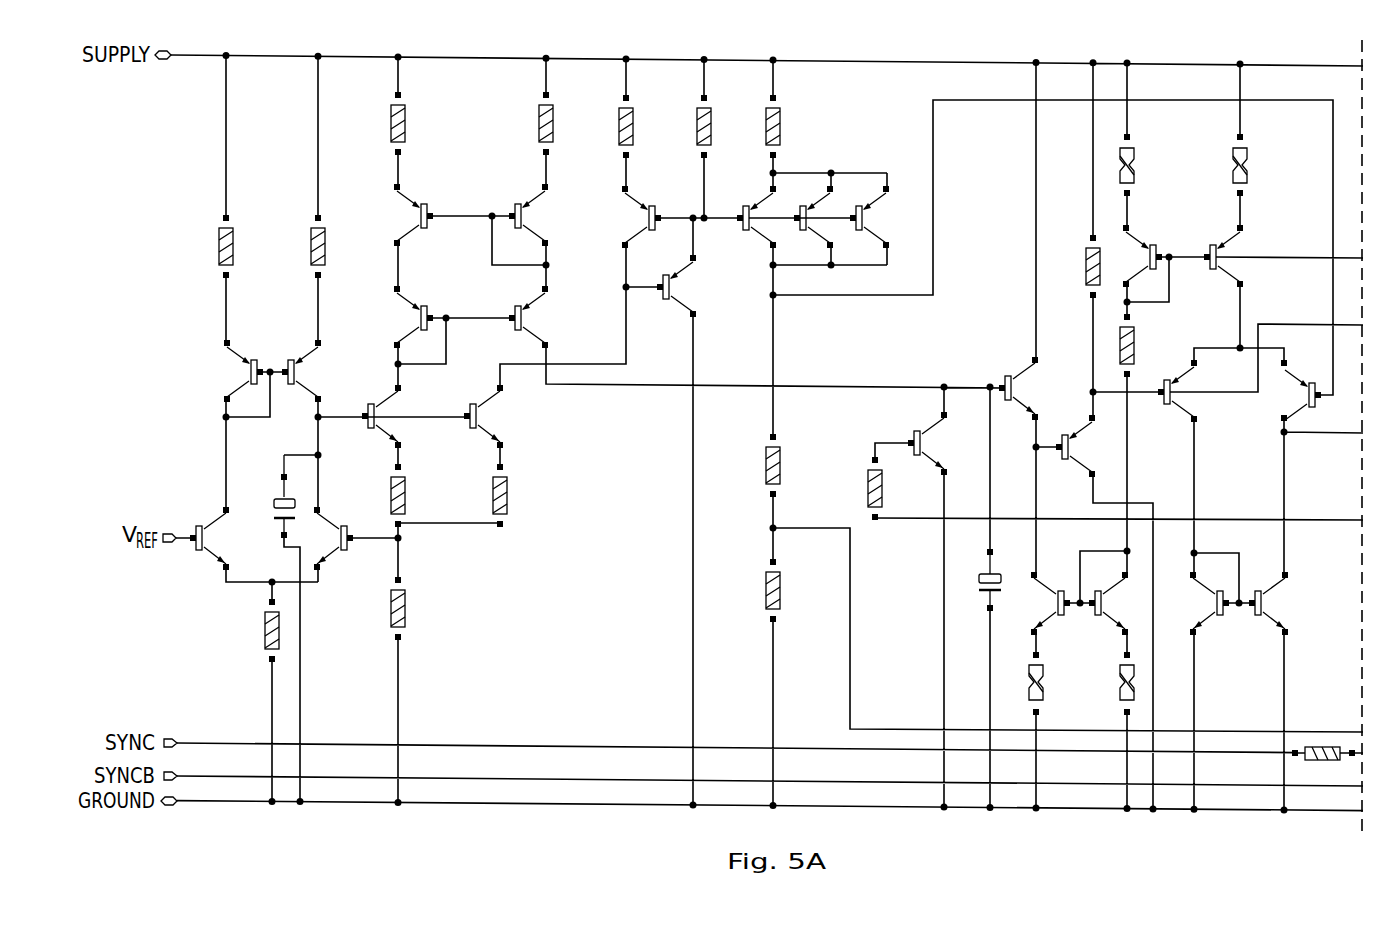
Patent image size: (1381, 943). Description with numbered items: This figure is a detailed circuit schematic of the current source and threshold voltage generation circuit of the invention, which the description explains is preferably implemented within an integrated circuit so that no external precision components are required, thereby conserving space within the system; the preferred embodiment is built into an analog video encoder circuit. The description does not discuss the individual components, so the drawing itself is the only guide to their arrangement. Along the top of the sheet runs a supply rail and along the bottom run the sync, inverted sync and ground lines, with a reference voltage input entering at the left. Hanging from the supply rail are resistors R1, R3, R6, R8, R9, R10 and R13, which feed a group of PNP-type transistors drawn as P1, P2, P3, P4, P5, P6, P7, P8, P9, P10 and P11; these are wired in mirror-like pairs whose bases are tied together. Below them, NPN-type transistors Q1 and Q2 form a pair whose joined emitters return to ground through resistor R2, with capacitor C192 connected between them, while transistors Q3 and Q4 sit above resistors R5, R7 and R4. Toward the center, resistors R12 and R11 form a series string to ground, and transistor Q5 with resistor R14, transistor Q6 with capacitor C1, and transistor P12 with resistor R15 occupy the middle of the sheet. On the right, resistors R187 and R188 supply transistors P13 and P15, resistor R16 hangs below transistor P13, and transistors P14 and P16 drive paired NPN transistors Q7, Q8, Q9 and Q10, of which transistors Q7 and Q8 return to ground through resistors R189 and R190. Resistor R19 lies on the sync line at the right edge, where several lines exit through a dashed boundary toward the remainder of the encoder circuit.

The resistor R1 is at (214, 246).
The resistor R2 is at (259, 630).
The resistor R3 is at (306, 246).
The resistor R4 is at (385, 608).
The resistor R5 is at (386, 500).
The resistor R6 is at (385, 123).
The resistor R7 is at (487, 500).
The resistor R8 is at (532, 123).
The resistor R9 is at (613, 126).
The resistor R10 is at (686, 126).
The resistor R11 is at (754, 590).
The resistor R12 is at (754, 465).
The resistor R13 is at (755, 126).
The resistor R14 is at (858, 488).
The resistor R15 is at (1075, 266).
The resistor R16 is at (1145, 345).
The resistor R19 is at (1323, 770).
The resistor R187 is at (1151, 165).
The resistor R188 is at (1264, 165).
The resistor R189 is at (1059, 683).
The resistor R190 is at (1104, 683).
The PNP transistor P1 is at (243, 367).
The PNP transistor P2 is at (301, 367).
The PNP transistor P3 is at (413, 313).
The PNP transistor P4 is at (413, 212).
The PNP transistor P5 is at (528, 313).
The PNP transistor P6 is at (528, 212).
The PNP transistor P7 is at (641, 213).
The PNP transistor P8 is at (676, 283).
The PNP transistor P9 is at (756, 213).
The PNP transistor P10 is at (811, 213).
The PNP transistor P11 is at (867, 213).
The PNP transistor P12 is at (1072, 443).
The PNP transistor P13 is at (1146, 253).
The PNP transistor P14 is at (1173, 388).
The PNP transistor P15 is at (1219, 253).
The PNP transistor P16 is at (1305, 388).
The NPN transistor Q1 is at (209, 539).
The NPN transistor Q2 is at (333, 539).
The NPN transistor Q3 is at (381, 417).
The NPN transistor Q4 is at (483, 417).
The NPN transistor Q5 is at (927, 445).
The NPN transistor Q6 is at (1018, 388).
The NPN transistor Q7 is at (1050, 600).
The NPN transistor Q8 is at (1108, 600).
The NPN transistor Q9 is at (1209, 600).
The NPN transistor Q10 is at (1266, 600).
The capacitor C1 is at (976, 580).
The capacitor C192 is at (263, 496).